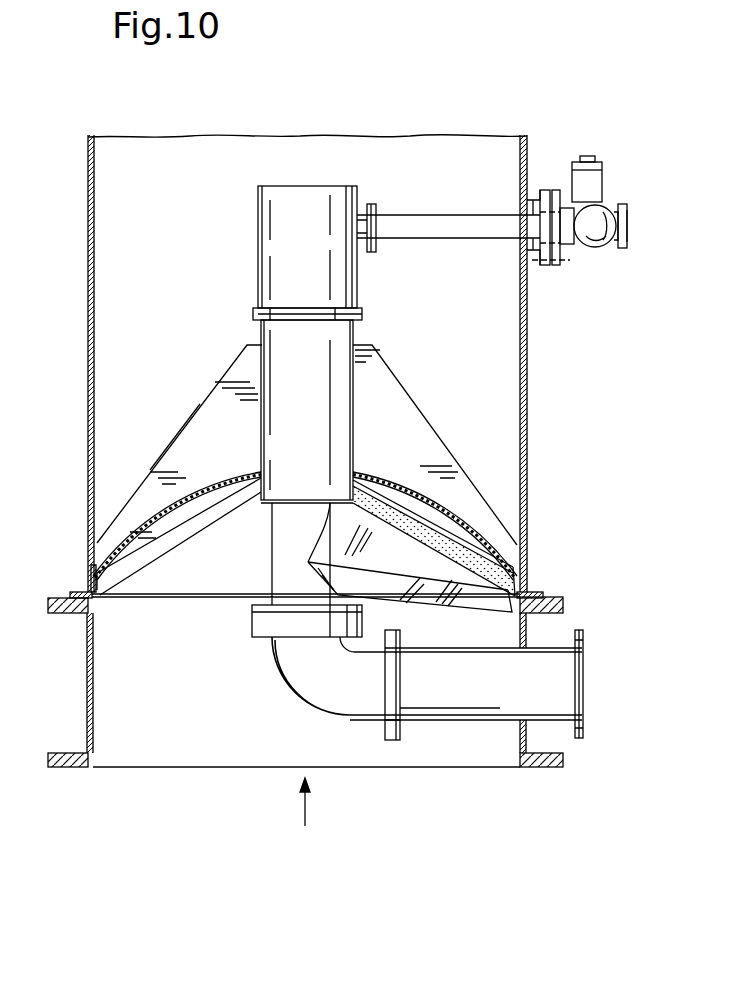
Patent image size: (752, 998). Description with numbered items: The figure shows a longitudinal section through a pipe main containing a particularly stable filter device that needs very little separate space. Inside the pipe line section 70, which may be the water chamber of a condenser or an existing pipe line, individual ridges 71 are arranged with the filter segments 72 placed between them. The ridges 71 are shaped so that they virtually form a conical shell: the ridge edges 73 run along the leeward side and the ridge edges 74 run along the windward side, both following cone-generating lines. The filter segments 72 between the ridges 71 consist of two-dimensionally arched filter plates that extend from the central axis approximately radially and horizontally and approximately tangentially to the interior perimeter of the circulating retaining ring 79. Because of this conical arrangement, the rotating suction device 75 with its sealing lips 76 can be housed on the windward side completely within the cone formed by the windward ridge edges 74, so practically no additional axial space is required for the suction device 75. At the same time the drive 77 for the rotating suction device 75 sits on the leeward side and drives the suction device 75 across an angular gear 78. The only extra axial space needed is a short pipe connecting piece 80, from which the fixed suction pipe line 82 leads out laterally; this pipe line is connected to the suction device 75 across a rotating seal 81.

The pipe line section 70 is at (88, 215).
The ridges 71 is at (220, 400).
The filter segments 72 is at (207, 480).
The ridge edges (leeward) 73 is at (168, 445).
The ridge edges (windward) 74 is at (176, 526).
The rotating suction device 75 is at (420, 592).
The sealing lips 76 is at (470, 553).
The drive 77 is at (592, 248).
The angular gear 78 is at (264, 249).
The circulating retaining ring 79 is at (92, 572).
The short pipe connecting piece 80 is at (87, 704).
The rotating seal 81 is at (256, 620).
The fixed suction pipe line 82 is at (560, 658).